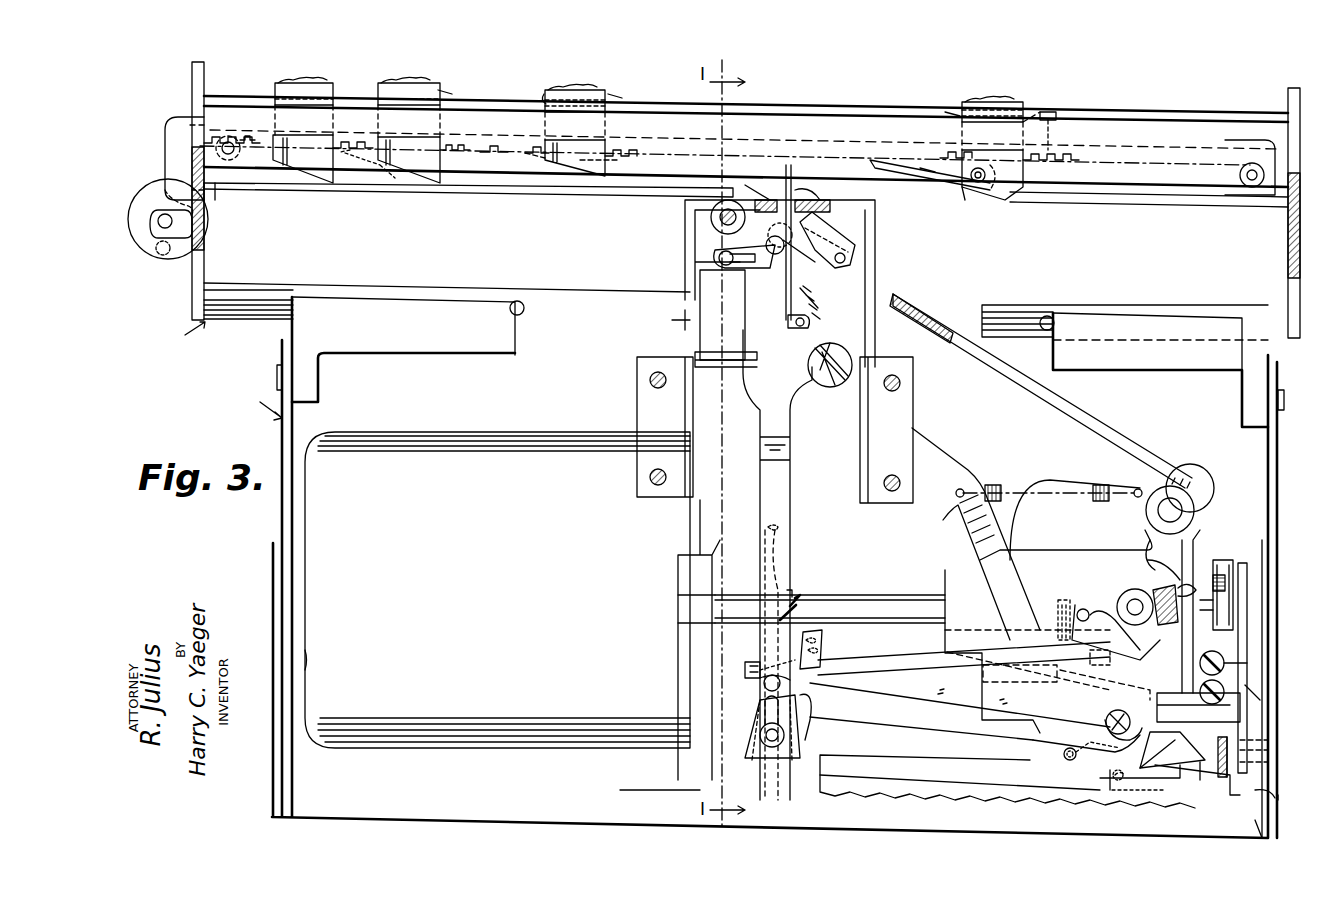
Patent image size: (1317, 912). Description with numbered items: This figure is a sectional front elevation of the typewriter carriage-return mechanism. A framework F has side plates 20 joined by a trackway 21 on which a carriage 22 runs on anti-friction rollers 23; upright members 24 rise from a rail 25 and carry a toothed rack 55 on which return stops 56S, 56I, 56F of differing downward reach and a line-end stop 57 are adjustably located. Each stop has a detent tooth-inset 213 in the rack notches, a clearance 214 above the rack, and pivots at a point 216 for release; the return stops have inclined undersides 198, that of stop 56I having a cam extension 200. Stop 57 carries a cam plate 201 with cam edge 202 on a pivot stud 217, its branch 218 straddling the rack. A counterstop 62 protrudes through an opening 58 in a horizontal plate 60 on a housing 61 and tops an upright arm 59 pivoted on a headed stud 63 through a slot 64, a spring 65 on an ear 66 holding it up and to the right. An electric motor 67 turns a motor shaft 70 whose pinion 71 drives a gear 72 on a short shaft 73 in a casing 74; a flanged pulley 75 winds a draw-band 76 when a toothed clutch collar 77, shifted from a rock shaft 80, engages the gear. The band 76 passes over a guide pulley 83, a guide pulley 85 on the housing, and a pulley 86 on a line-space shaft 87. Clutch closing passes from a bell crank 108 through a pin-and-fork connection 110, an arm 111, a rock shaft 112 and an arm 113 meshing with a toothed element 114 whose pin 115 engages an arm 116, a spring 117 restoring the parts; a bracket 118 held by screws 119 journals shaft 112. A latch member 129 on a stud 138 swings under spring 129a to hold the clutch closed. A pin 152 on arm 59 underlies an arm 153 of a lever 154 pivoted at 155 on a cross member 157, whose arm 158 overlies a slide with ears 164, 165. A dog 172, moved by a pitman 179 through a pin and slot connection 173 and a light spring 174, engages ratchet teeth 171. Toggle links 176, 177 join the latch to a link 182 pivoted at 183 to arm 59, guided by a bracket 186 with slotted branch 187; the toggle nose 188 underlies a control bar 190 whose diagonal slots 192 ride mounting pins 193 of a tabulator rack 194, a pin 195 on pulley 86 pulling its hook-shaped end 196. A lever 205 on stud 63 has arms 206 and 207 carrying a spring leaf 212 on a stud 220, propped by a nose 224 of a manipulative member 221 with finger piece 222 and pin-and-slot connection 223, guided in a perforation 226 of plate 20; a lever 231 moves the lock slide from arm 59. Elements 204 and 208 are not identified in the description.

The side plates 20 is at (282, 518).
The track way 21 is at (468, 352).
The carriage 22 is at (190, 340).
The anti-friction rollers 23 is at (509, 310).
The upright members 24 is at (197, 94).
The rail 25 is at (552, 324).
The toothed rack 55 is at (814, 120).
The carriage return stop 56F is at (272, 92).
The carriage return stop 56I is at (376, 92).
The carriage return stop 56S is at (572, 92).
The line-end-defining stop 57 is at (978, 98).
The opening 58 is at (760, 188).
The upright arm 59 is at (760, 522).
The horizontal plate 60 is at (852, 200).
The housing 61 is at (880, 316).
The counterstop 62 is at (786, 182).
The headed stud 63 is at (764, 737).
The slot 64 is at (785, 718).
The spring 65 is at (818, 300).
The ear 66 is at (800, 335).
The electric motor 67 is at (497, 590).
The motor shaft 70 is at (838, 596).
The gear pinion 71 is at (1083, 608).
The gear 72 is at (1072, 704).
The short spindle 73 is at (990, 672).
The casing 74 is at (1032, 552).
The flanged pulley 75 is at (1210, 742).
The carriage-return draw-band 76 is at (450, 188).
The toothed clutch collar 77 is at (1132, 732).
The rock shaft 80 is at (1133, 590).
The guide pulley 83 is at (1148, 530).
The guide pulley 85 is at (745, 208).
The pulley 86 is at (158, 256).
The line-space actuating shaft 87 is at (158, 222).
The bell crank 108 is at (1247, 630).
The pin-and-fork connection 110 is at (1255, 697).
The arm 111 is at (1250, 712).
The rock shaft 112 is at (1234, 600).
The rearwardly reaching arm 113 is at (1180, 586).
The toothed element 114 is at (1152, 586).
The pin 115 is at (1080, 610).
The arm 116 is at (1125, 604).
The spring 117 is at (1220, 576).
The bracket 118 is at (1247, 654).
The screws 119 is at (1224, 686).
The latch member 129 is at (1006, 572).
The spring 129a is at (996, 488).
The stud 138 is at (846, 336).
The pin 152 is at (764, 688).
The arm 153 is at (878, 694).
The transversely extending lever 154 is at (1048, 732).
The pivot 155 is at (1115, 716).
The cross member 157 is at (660, 786).
The rightwardly extending arm 158 is at (1180, 742).
The ear 164 is at (1268, 746).
The ear 165 is at (1268, 768).
The ratchet teeth 171 is at (800, 600).
The dog 172 is at (822, 642).
The pin and slot connection 173 is at (810, 694).
The light spring 174 is at (752, 664).
The link 176 is at (838, 270).
The toggle link 177 is at (760, 258).
The pitman 179 is at (903, 654).
The link 182 is at (708, 290).
The pivotal connection 183 is at (808, 264).
The bracket 186 is at (692, 312).
The slotted branch 187 is at (732, 362).
The nose 188 is at (798, 190).
The control bar 190 is at (492, 188).
The diagonal slots 192 is at (200, 140).
The mounting pins 193 is at (230, 136).
The tabulator rack 194 is at (216, 192).
The pin 195 is at (162, 258).
The hook-shaped end 196 is at (170, 172).
The inclined undersides 198 is at (580, 165).
The inclined cam extension 200 is at (360, 185).
The cam plate 201 is at (936, 184).
The cam edge 202 is at (893, 175).
The tab 204 is at (964, 192).
The lever 205 is at (856, 766).
The up-reaching arm 206 is at (780, 562).
The arm 207 is at (972, 770).
The pin 208 is at (780, 527).
The spring leaf 212 is at (1212, 768).
The detent tooth-inset 213 is at (544, 158).
The clearance 214 is at (540, 100).
The point 216 is at (436, 104).
The pivot stud 217 is at (990, 190).
The branch 218 is at (1050, 130).
The stud 220 is at (1066, 754).
The manipulative member 221 is at (1190, 788).
The finger piece 222 is at (1278, 792).
The pin-and-slot connection 223 is at (1135, 788).
The nose 224 is at (1108, 778).
The perforation 226 is at (1268, 832).
The lever 231 is at (792, 592).
The machine framework F is at (260, 402).